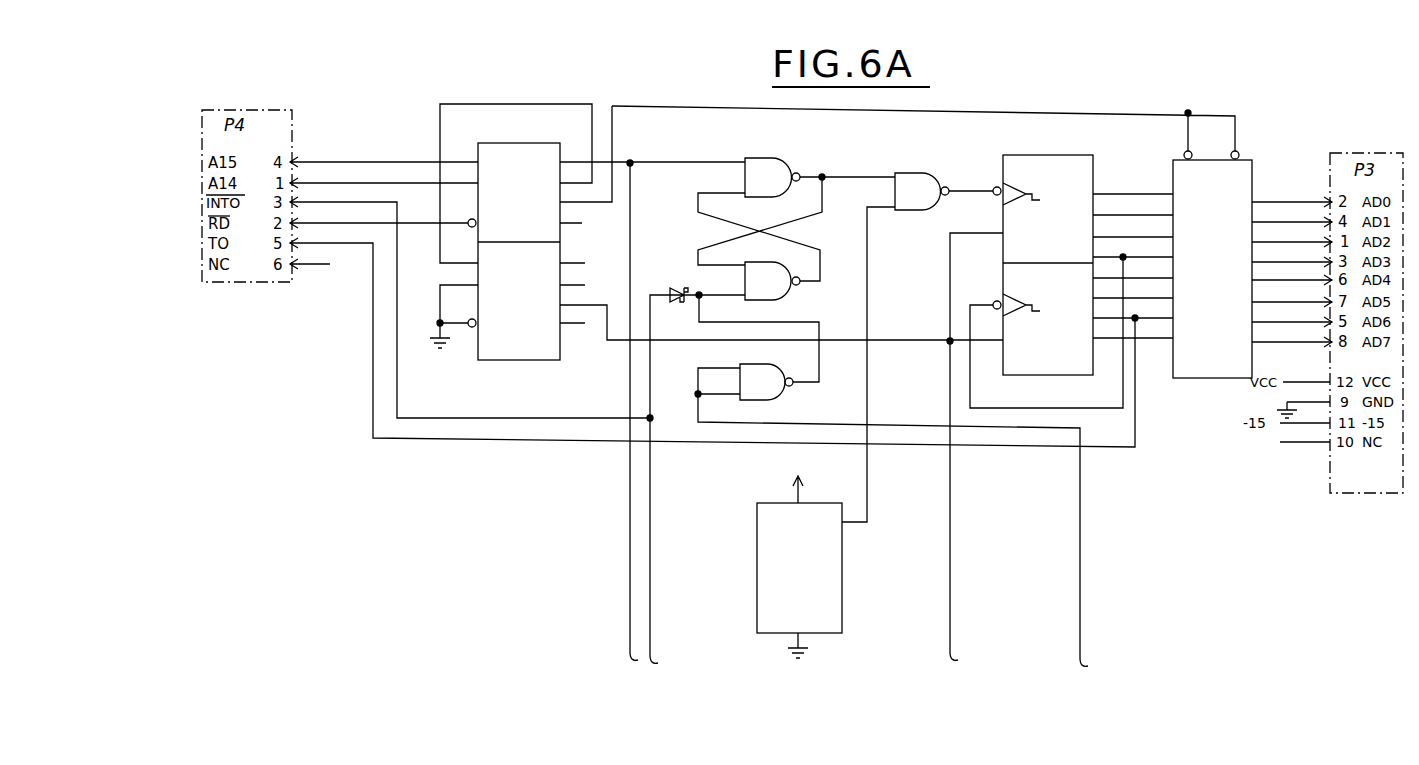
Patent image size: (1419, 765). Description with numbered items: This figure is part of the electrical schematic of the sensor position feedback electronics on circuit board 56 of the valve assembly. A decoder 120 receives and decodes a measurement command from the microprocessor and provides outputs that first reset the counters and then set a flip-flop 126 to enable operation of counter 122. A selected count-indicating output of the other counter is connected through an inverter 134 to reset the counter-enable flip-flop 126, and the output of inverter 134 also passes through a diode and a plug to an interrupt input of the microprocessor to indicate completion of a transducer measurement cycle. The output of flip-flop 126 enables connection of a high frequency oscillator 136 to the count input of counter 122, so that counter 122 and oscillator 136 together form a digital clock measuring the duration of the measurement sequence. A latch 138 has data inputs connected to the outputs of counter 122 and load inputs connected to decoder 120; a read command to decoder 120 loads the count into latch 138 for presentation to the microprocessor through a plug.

The circuit board 56 is at (1018, 87).
The decoder 120 is at (497, 150).
The counter 122 is at (1055, 160).
The flip-flop 126 is at (836, 160).
The inverter 134 is at (764, 372).
The high frequency oscillator 136 is at (770, 572).
The latch 138 is at (1253, 174).